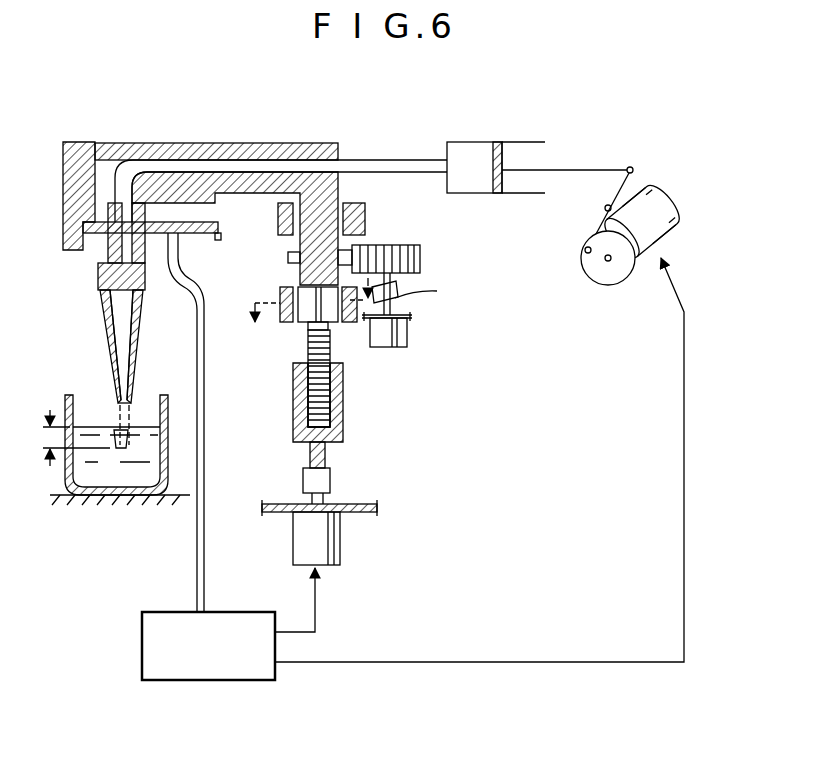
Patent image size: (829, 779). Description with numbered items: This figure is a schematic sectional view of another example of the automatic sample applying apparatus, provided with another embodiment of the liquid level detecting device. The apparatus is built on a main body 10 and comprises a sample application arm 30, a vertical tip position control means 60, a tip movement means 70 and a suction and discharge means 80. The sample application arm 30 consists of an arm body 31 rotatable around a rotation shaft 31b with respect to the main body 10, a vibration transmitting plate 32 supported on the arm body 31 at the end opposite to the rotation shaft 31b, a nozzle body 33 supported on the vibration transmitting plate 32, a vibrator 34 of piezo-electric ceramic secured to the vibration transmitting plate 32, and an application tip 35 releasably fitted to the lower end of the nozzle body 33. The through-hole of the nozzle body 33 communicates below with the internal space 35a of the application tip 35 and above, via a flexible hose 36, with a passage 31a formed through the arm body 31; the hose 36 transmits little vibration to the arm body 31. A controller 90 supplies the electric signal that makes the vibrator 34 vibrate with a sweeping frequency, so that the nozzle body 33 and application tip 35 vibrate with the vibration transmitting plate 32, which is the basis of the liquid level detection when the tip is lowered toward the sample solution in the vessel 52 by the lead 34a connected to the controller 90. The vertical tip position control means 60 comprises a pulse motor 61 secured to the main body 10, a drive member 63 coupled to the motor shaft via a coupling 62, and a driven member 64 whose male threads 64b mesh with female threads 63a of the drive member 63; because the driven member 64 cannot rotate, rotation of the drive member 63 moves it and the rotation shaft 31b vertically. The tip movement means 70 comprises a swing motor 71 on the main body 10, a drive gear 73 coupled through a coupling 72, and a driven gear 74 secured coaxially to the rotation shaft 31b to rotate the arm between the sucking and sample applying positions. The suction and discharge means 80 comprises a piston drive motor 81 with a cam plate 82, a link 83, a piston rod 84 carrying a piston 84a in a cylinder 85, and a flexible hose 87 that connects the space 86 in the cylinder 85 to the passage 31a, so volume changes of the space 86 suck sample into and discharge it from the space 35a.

The main body 10 is at (290, 290).
The sample application arm 30 is at (193, 140).
The arm body 31 is at (242, 143).
The passage 31a is at (283, 143).
The rotation shaft 31b is at (313, 230).
The vibration transmitting plate 32 is at (178, 235).
The nozzle body 33 is at (100, 258).
The vibrator 34 is at (164, 270).
The tube lead 34a is at (207, 383).
The application tip 35 is at (106, 318).
The internal space 35a is at (122, 343).
The hose 36 is at (141, 143).
The crucible 52 is at (62, 403).
The vertical tip position control means 60 is at (352, 410).
The pulse motor 61 is at (340, 547).
The coupling 62 is at (330, 470).
The drive member 63 is at (295, 430).
The female threads 63a is at (308, 408).
The driven member 64 is at (308, 343).
The male threads 64b is at (332, 355).
The tip movement means 70 is at (447, 328).
The swing motor 71 is at (410, 340).
The coupling 72 is at (400, 293).
The drive gear 73 is at (403, 245).
The driven gear 74 is at (288, 257).
The suction and discharge means 80 is at (567, 146).
The piston drive motor 81 is at (660, 193).
The cam plate 82 is at (603, 283).
The link 83 is at (612, 192).
The piston rod 84 is at (607, 168).
The piston 84a is at (503, 183).
The cylinder 85 is at (497, 145).
The space 86 is at (458, 150).
The flexible hose 87 is at (385, 160).
The controller 90 is at (195, 682).